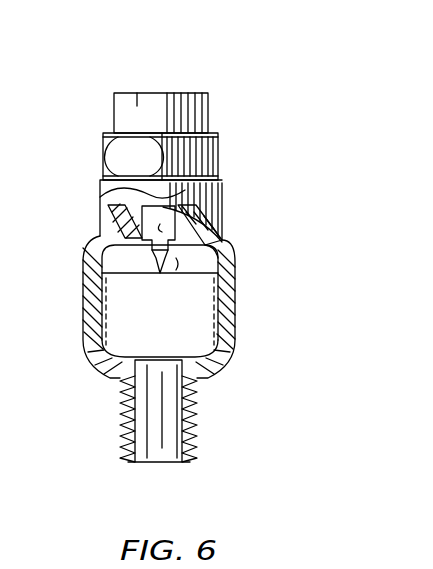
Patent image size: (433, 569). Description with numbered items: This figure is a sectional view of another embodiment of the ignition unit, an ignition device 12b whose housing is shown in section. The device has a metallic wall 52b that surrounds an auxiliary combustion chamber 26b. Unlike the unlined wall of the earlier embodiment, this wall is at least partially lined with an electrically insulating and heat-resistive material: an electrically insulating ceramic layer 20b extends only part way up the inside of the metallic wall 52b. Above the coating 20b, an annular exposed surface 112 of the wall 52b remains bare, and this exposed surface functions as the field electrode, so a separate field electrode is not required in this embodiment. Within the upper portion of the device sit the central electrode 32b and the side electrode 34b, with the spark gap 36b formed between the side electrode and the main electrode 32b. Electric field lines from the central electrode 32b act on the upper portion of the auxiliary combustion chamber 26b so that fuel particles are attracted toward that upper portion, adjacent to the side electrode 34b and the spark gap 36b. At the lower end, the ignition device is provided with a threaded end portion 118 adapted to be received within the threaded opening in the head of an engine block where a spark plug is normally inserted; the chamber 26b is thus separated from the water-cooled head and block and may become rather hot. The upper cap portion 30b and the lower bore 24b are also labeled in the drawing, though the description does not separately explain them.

The ignition device 12b is at (285, 110).
The cap nut 30b is at (208, 110).
The central electrode 32b is at (108, 218).
The side electrode 34b is at (215, 240).
The spark gap 36b is at (165, 272).
The annular exposed surface 112 is at (210, 256).
The metallic wall 52b is at (225, 285).
The electrically insulating ceramic layer 20b is at (212, 325).
The auxiliary combustion chamber 26b is at (127, 318).
The bore 24b is at (158, 398).
The threaded end portion 118 is at (197, 405).